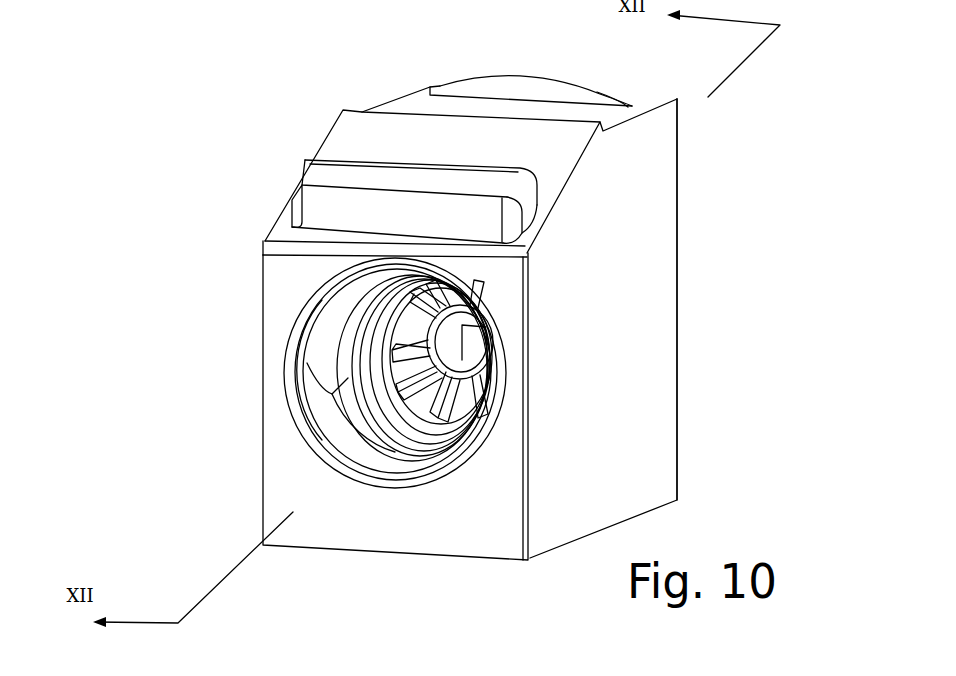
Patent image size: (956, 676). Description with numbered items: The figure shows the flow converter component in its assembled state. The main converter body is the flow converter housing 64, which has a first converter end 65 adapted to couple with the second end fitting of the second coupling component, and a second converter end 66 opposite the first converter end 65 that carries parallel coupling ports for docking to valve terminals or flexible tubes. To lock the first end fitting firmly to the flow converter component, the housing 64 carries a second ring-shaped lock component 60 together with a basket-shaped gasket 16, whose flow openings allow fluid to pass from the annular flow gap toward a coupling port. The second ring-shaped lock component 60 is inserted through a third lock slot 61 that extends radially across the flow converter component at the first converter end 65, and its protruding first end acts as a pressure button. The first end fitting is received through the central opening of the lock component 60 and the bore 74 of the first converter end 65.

The basket-shaped gasket 16 is at (350, 328).
The second ring-shaped lock component 60 is at (338, 173).
The third lock slot 61 is at (537, 217).
The flow converter housing 64 is at (638, 272).
The first converter end 65 is at (310, 480).
The second converter end 66 is at (678, 405).
The bore 74 is at (453, 450).